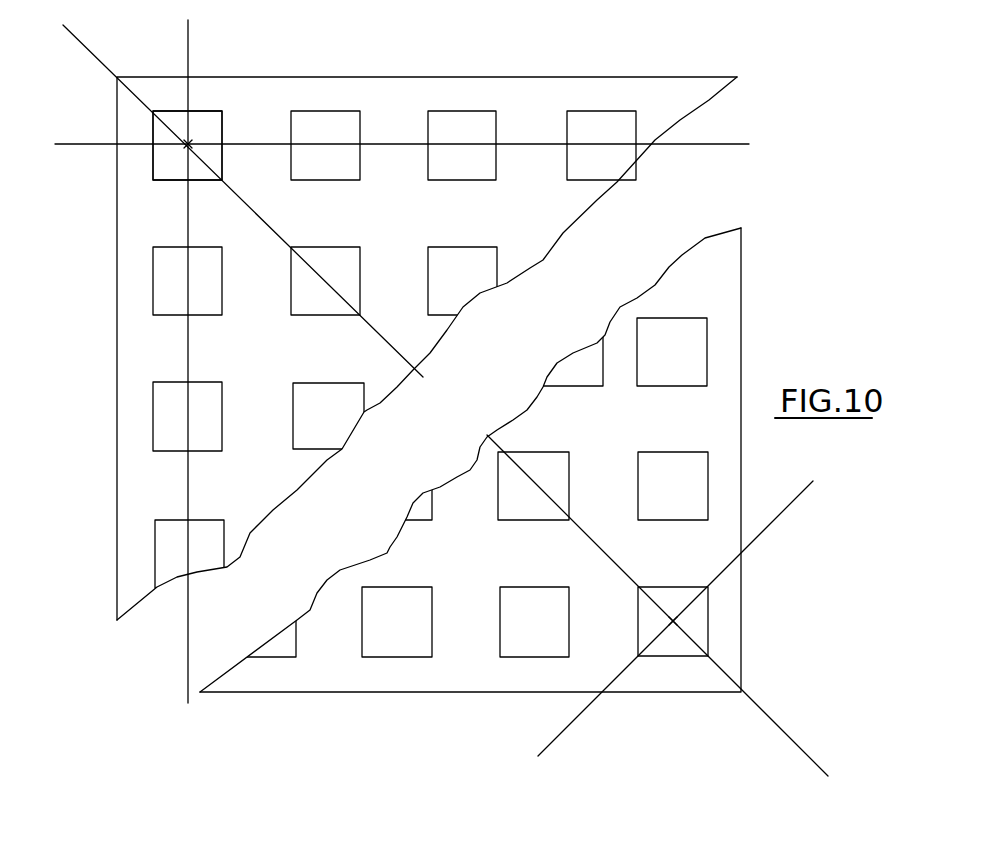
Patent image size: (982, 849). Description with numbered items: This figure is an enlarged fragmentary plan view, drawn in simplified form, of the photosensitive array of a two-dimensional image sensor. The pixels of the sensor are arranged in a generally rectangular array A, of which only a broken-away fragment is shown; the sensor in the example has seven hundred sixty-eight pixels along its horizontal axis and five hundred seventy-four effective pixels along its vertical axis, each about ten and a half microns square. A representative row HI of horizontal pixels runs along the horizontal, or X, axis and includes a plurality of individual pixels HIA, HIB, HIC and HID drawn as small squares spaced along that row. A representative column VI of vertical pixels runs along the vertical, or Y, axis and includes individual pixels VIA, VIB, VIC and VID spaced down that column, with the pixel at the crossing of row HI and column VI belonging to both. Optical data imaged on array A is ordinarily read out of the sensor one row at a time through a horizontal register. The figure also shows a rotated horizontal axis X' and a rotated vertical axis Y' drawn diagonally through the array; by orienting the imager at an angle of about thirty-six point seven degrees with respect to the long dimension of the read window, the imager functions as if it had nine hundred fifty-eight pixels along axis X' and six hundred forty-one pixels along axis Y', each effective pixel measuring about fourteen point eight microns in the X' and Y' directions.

The rectangular array of pixels A is at (750, 48).
The row of horizontal pixels HI is at (741, 143).
The column of vertical pixels VI is at (190, 653).
The individual pixel HIA is at (211, 111).
The individual pixel HIB is at (343, 111).
The individual pixel HIC is at (480, 111).
The individual pixel HID is at (620, 111).
The individual pixel VIA is at (153, 163).
The individual pixel VIB is at (153, 283).
The individual pixel VIC is at (153, 407).
The individual pixel VID is at (155, 547).
The rotated horizontal axis X' is at (670, 615).
The rotated vertical axis Y' is at (688, 613).